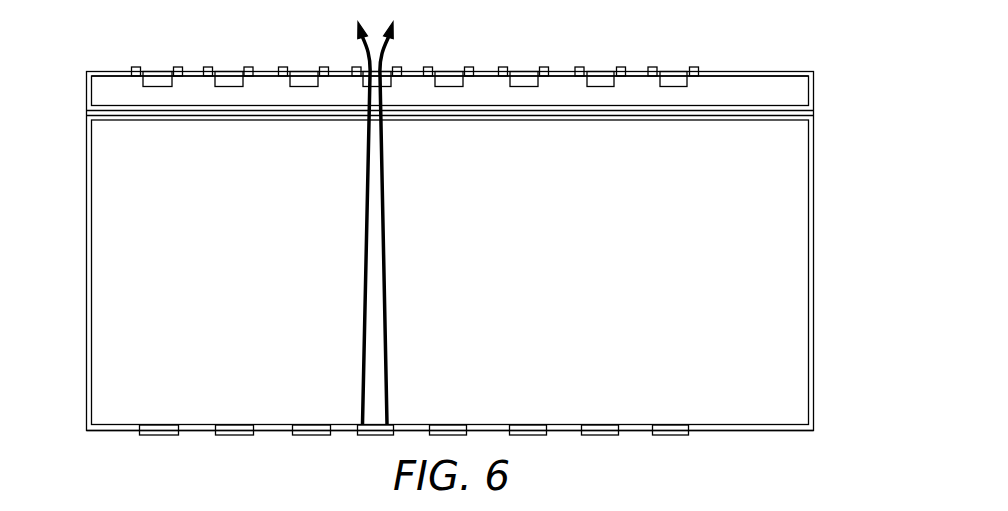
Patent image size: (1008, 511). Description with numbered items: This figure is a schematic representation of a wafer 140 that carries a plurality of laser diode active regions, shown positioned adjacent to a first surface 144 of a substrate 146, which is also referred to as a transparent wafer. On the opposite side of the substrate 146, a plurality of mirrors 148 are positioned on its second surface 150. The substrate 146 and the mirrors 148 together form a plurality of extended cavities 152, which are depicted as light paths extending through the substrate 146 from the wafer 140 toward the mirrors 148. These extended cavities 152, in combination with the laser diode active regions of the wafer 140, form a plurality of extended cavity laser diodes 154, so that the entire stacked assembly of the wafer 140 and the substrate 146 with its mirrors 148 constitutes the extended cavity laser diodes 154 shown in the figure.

The wafer 140 is at (800, 92).
The first surface 144 is at (750, 102).
The substrate 146 is at (792, 272).
The mirrors 148 is at (601, 435).
The second surface 150 is at (767, 431).
The extended cavities 152 is at (375, 268).
The extended cavity laser diodes 154 is at (76, 72).